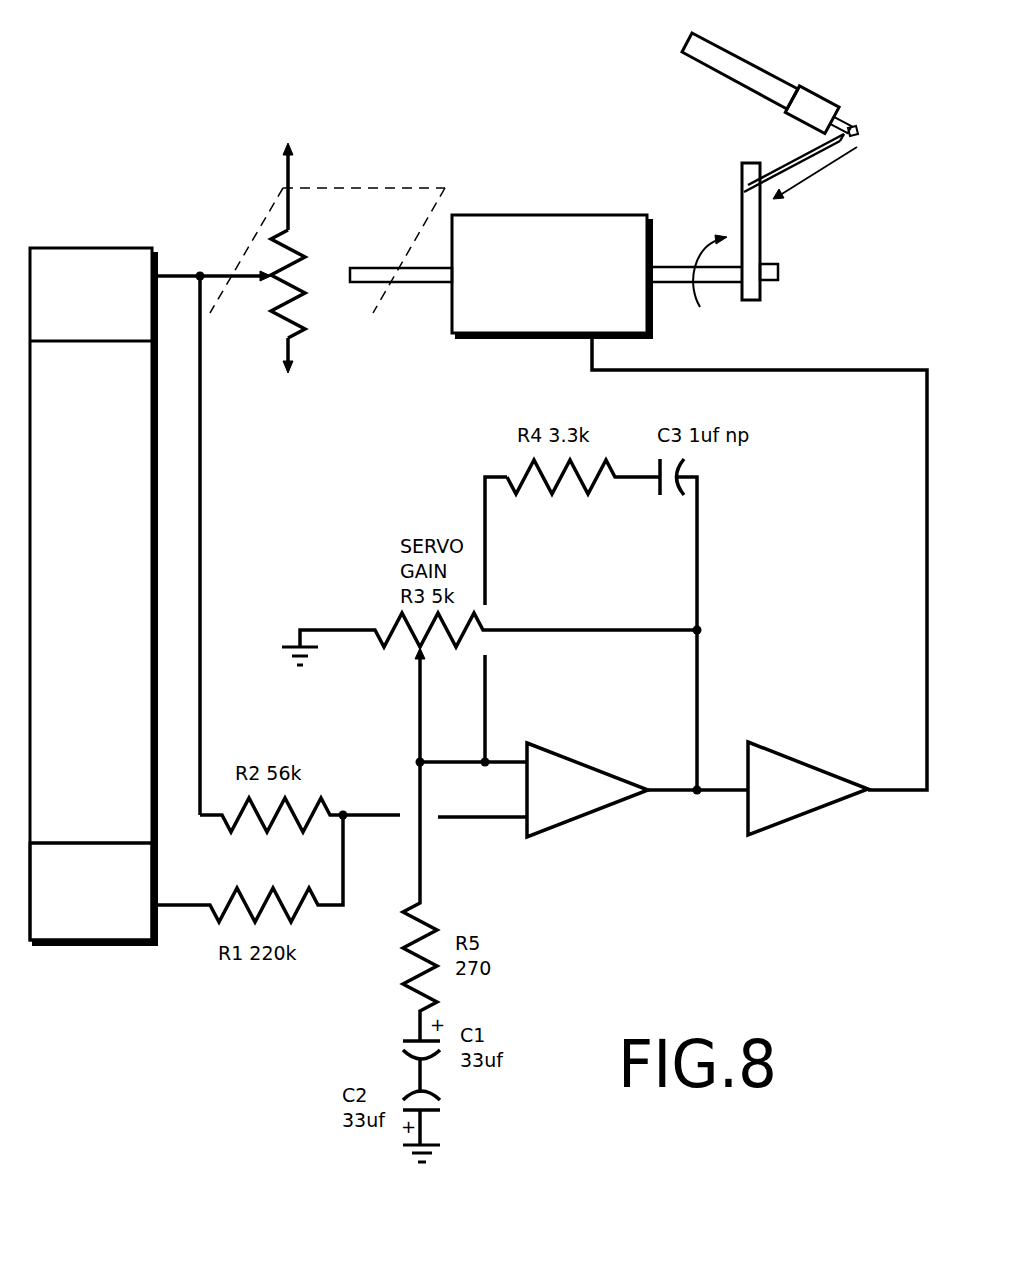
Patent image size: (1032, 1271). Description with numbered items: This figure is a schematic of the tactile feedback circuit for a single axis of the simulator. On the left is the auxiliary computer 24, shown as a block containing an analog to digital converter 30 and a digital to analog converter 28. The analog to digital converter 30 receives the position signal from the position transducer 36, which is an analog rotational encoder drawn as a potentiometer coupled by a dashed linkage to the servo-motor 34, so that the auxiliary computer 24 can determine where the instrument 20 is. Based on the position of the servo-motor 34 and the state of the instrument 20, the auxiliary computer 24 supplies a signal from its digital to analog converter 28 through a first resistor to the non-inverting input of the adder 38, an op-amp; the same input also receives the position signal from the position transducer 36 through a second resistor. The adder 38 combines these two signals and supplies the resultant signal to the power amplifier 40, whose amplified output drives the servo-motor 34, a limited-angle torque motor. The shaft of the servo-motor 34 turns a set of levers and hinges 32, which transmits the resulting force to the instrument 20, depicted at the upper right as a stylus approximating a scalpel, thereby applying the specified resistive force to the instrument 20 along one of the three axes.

The instrument 20 is at (752, 65).
The auxiliary computer 24 is at (117, 556).
The digital to analog converter 28 is at (100, 943).
The analog to digital converter 30 is at (100, 248).
The levers and hinges 32 is at (822, 173).
The servo-motor 34 is at (576, 215).
The position transducer 36 is at (292, 158).
The adder 38 is at (590, 818).
The power amplifier 40 is at (803, 815).